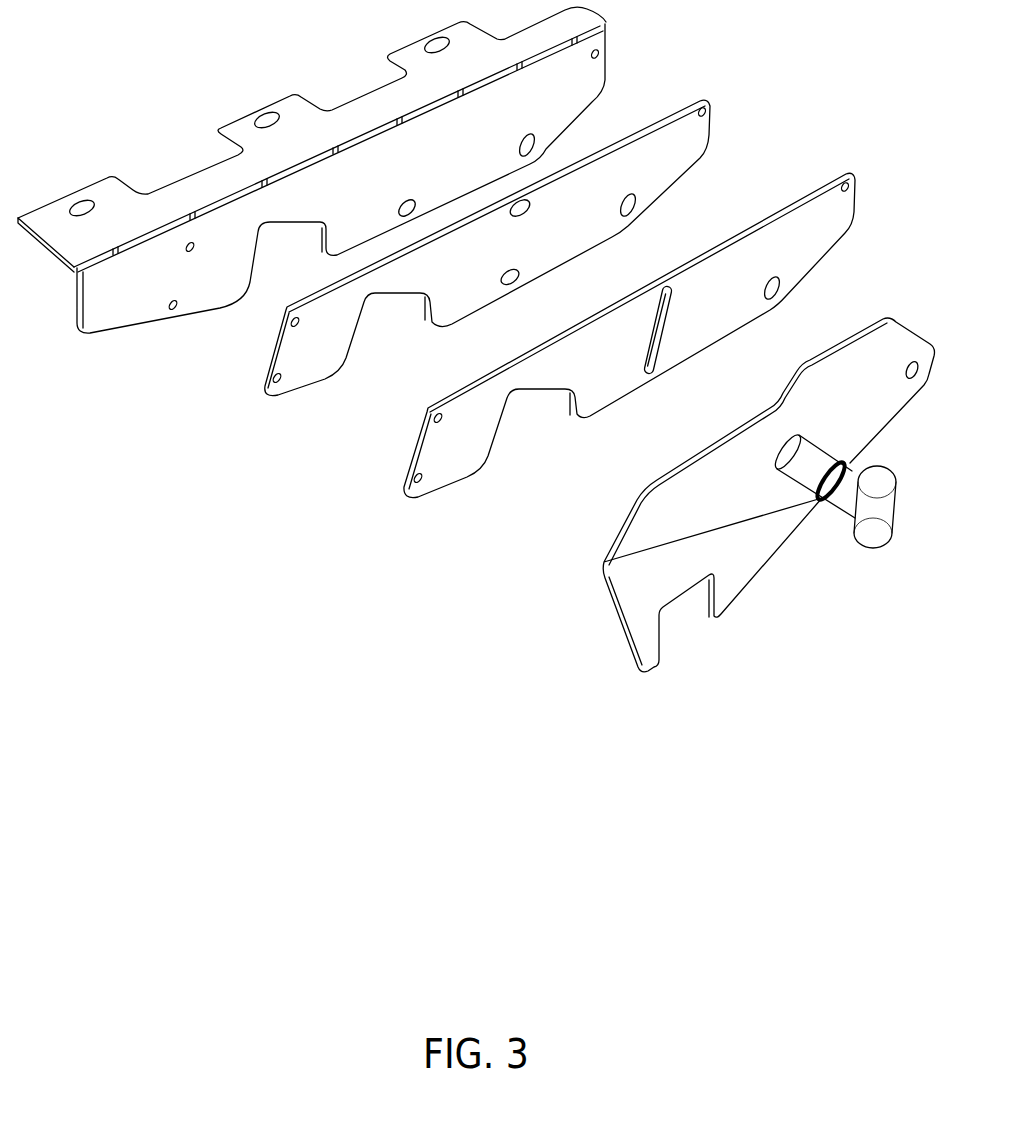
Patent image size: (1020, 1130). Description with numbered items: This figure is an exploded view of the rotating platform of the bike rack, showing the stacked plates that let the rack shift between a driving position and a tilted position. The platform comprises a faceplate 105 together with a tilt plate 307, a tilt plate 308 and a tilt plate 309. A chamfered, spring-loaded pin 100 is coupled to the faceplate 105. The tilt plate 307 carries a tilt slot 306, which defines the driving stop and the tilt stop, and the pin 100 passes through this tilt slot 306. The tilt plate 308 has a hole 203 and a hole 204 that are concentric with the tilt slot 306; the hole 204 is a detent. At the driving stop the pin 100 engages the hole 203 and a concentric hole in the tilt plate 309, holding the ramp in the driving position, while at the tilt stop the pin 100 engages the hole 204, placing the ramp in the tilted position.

The pin 100 is at (887, 523).
The faceplate 105 is at (646, 648).
The hole 203 is at (519, 279).
The hole 204 is at (529, 211).
The tilt slot 306 is at (668, 308).
The tilt plate 307 is at (629, 354).
The tilt plate 308 is at (487, 267).
The tilt plate 309 is at (126, 308).